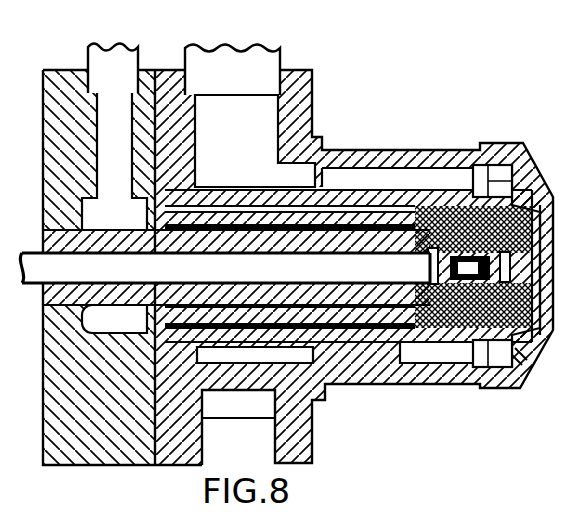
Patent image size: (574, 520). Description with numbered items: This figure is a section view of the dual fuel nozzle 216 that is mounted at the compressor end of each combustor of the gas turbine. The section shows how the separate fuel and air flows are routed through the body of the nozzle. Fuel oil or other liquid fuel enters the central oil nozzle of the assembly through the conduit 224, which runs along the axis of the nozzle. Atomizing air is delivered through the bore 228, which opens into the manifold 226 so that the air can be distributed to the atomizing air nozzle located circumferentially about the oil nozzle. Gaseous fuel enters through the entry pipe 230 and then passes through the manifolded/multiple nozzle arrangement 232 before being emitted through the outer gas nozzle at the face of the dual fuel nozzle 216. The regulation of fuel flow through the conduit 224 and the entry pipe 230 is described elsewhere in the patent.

The dual fuel nozzle 216 is at (466, 93).
The conduit 224 is at (353, 270).
The manifold 226 is at (417, 222).
The bore 228 is at (100, 63).
The entry pipe 230 is at (267, 63).
The manifolded/multiple nozzle arrangement 232 is at (503, 185).